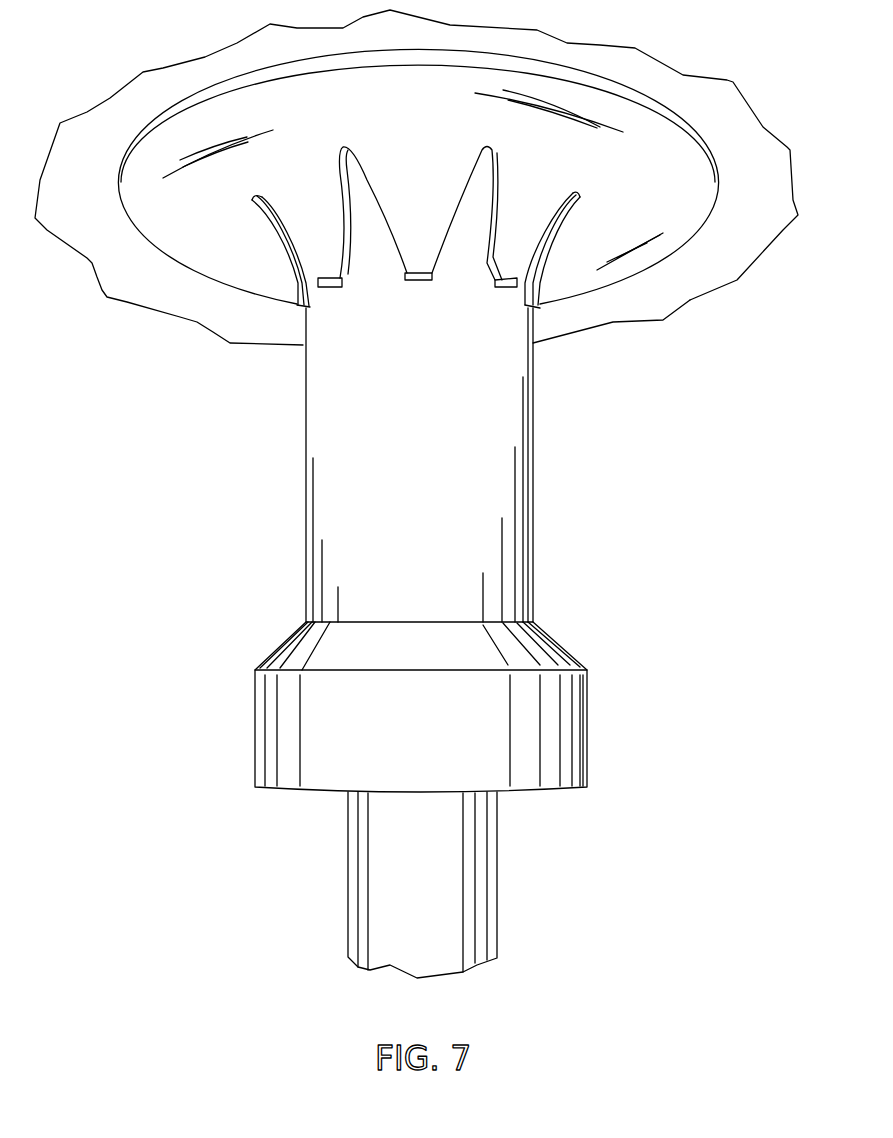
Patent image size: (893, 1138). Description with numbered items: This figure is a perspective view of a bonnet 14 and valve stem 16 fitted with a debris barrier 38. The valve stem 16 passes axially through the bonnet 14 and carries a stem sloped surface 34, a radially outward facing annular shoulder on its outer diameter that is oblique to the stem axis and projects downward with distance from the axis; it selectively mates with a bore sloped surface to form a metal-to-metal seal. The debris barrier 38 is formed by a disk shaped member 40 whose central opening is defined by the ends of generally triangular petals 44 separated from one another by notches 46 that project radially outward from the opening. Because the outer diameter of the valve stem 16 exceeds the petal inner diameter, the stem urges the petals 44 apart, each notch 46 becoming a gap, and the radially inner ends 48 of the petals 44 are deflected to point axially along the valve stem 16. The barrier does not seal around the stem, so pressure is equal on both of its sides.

The bonnet 14 is at (427, 194).
The valve stem 16 is at (330, 498).
The stem sloped surface 34 is at (557, 645).
The debris barrier 38 is at (583, 315).
The disk shaped member 40 is at (168, 230).
The petals 44 is at (325, 230).
The notches 46 is at (533, 260).
The radially inner ends 48 is at (330, 285).